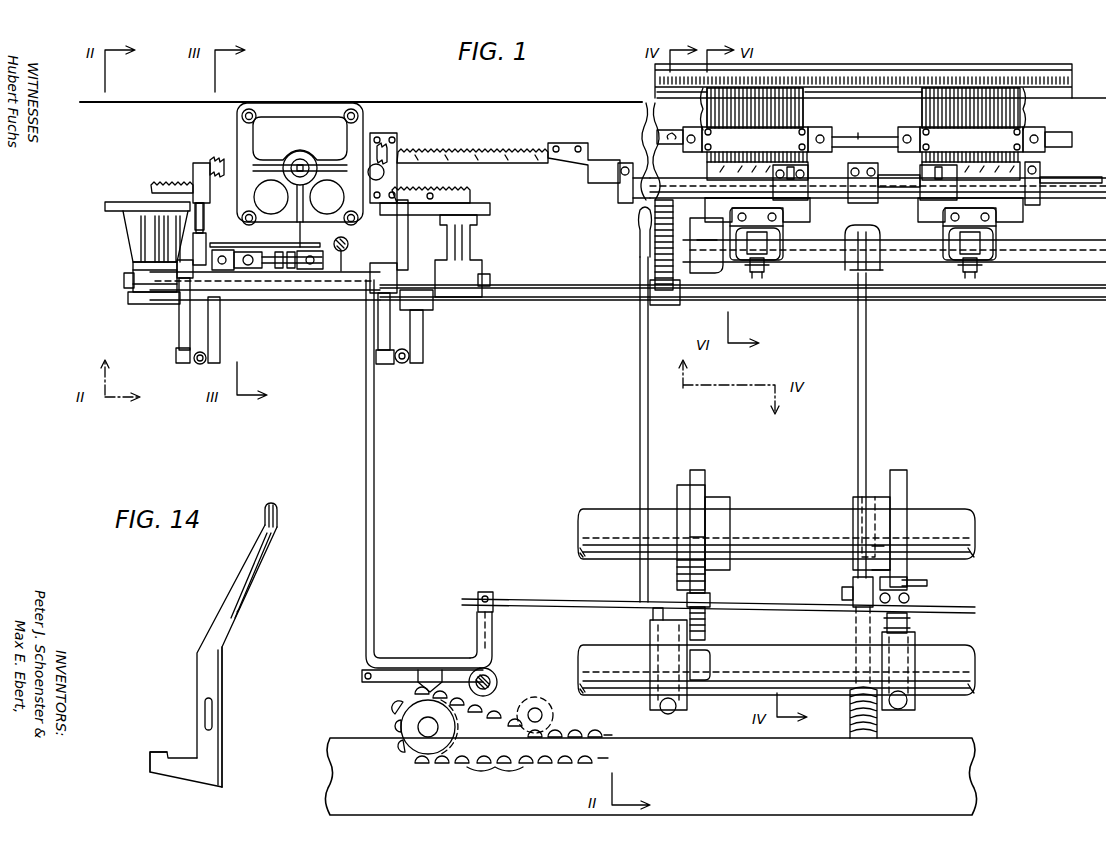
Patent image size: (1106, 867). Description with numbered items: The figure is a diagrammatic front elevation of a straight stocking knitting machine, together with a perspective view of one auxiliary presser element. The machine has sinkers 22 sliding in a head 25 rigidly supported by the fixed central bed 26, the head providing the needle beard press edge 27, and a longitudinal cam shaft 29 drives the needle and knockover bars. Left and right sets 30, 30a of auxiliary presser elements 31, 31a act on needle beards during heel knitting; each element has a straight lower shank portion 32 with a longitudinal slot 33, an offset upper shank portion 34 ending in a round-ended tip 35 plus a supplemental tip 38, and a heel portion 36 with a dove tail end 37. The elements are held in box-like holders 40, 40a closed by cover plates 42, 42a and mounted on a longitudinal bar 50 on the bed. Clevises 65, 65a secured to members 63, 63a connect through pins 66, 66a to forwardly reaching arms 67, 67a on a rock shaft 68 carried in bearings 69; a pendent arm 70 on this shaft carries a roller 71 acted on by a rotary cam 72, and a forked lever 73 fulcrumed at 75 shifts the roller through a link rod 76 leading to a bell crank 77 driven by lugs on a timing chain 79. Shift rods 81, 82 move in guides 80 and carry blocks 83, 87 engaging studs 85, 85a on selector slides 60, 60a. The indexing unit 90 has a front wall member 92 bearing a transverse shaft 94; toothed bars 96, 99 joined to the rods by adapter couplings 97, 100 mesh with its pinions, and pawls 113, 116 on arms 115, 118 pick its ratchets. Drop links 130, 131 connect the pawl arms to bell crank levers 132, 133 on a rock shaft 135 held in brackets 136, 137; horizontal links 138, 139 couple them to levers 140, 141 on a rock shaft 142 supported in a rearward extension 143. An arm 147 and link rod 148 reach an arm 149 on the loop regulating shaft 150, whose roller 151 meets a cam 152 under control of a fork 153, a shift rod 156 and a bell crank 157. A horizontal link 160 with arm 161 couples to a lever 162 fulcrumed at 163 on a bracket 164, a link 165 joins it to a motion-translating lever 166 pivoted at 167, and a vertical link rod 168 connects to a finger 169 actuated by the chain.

In FIG. 1, the sinkers 22 is at (827, 76).
In FIG. 1, the head 25 is at (866, 74).
In FIG. 1, the central member or bed 26 is at (614, 104).
In FIG. 1, the needle beard press edge 27 is at (908, 86).
In FIG. 1, the cam shaft 29 is at (790, 510).
In FIG. 1, the left set of auxiliary presser elements 30 is at (689, 109).
In FIG. 1, the right set of auxiliary presser elements 30a is at (1026, 110).
In FIG. 1, the auxiliary presser element 31 is at (801, 114).
In FIG. 14, the auxiliary presser element 31 is at (245, 645).
In FIG. 1, the auxiliary presser element 31a is at (924, 114).
In FIG. 14, the lower shank portion 32 is at (225, 732).
In FIG. 14, the slot 33 is at (198, 708).
In FIG. 14, the upper shank portion 34 is at (234, 579).
In FIG. 14, the needle beard engaging tip 35 is at (267, 502).
In FIG. 14, the bottom or heel portion 36 is at (184, 776).
In FIG. 14, the dove tail end 37 is at (150, 757).
In FIG. 14, the supplemental needle beard engaging tip 38 is at (280, 513).
In FIG. 1, the box-like holder 40 is at (668, 134).
In FIG. 1, the box-like holder 40a is at (1068, 137).
In FIG. 1, the cover plate 42 is at (757, 139).
In FIG. 1, the cover plate 42a is at (971, 139).
In FIG. 1, the longitudinal bar 50 is at (860, 134).
In FIG. 1, the selector slide 60 is at (707, 168).
In FIG. 1, the selector slide 60a is at (1037, 166).
In FIG. 1, the member 63 is at (800, 212).
In FIG. 1, the member 63a is at (1005, 214).
In FIG. 1, the clevis 65 is at (736, 228).
In FIG. 1, the clevis 65a is at (950, 248).
In FIG. 1, the pin 66 is at (780, 251).
In FIG. 1, the pin 66a is at (1000, 251).
In FIG. 1, the forwardly reaching arm 67 is at (764, 266).
In FIG. 1, the forwardly reaching arm 67a is at (980, 266).
In FIG. 1, the rock shaft 68 is at (1088, 242).
In FIG. 1, the bearings 69 is at (706, 245).
In FIG. 1, the pendent arm 70 is at (868, 392).
In FIG. 1, the roller 71 is at (904, 590).
In FIG. 1, the rotary cam 72 is at (912, 484).
In FIG. 1, the forked lever 73 is at (926, 592).
In FIG. 1, the fulcrum 75 is at (912, 624).
In FIG. 1, the link rod 76 is at (460, 608).
In FIG. 1, the bell crank 77 is at (470, 640).
In FIG. 1, the timing chain 79 is at (502, 743).
In FIG. 1, the spaced guides 80 is at (622, 212).
In FIG. 1, the shift rod 81 is at (626, 164).
In FIG. 1, the shift rod 82 is at (624, 202).
In FIG. 1, the block 83 is at (802, 196).
In FIG. 1, the stud 85 is at (806, 166).
In FIG. 1, the stud 85a is at (930, 168).
In FIG. 1, the block 87 is at (918, 192).
In FIG. 1, the indexing unit 90 is at (324, 90).
In FIG. 1, the front wall member 92 is at (338, 108).
In FIG. 1, the transverse shaft 94 is at (300, 158).
In FIG. 1, the toothed horizontal bar 96 is at (155, 184).
In FIG. 1, the adapter coupling 97 is at (448, 200).
In FIG. 1, the toothed horizontal bar 99 is at (505, 148).
In FIG. 1, the adapter coupling 100 is at (559, 164).
In FIG. 1, the pawl 113 is at (271, 197).
In FIG. 1, the supporting arm 115 is at (215, 156).
In FIG. 1, the pawl 116 is at (327, 197).
In FIG. 1, the pawl arm 118 is at (396, 148).
In FIG. 1, the drop link 130 is at (195, 167).
In FIG. 1, the drop link 131 is at (408, 271).
In FIG. 1, the bell crank lever 132 is at (180, 333).
In FIG. 1, the bell crank lever 133 is at (372, 332).
In FIG. 1, the rock shaft 135 is at (124, 279).
In FIG. 1, the suspension bearing bracket 136 is at (122, 232).
In FIG. 1, the suspension bearing bracket 137 is at (472, 238).
In FIG. 1, the horizontal link 138 is at (200, 364).
In FIG. 1, the horizontal link 139 is at (403, 363).
In FIG. 1, the bell crank lever 140 is at (220, 342).
In FIG. 1, the bell crank lever 141 is at (425, 331).
In FIG. 1, the rock shaft 142 is at (575, 296).
In FIG. 1, the rearward extension 143 is at (132, 307).
In FIG. 1, the arm 147 is at (644, 270).
In FIG. 1, the link rod 148 is at (637, 420).
In FIG. 1, the arm 149 is at (658, 680).
In FIG. 1, the loop regulating shaft 150 is at (582, 663).
In FIG. 1, the roller 151 is at (704, 680).
In FIG. 1, the rotary cam 152 is at (711, 478).
In FIG. 1, the fork 153 is at (713, 623).
In FIG. 1, the horizontal shift rod 156 is at (566, 598).
In FIG. 1, the bell crank 157 is at (486, 582).
In FIG. 1, the horizontal link 160 is at (308, 266).
In FIG. 1, the arm 161 is at (314, 244).
In FIG. 1, the transversely arranged lever 162 is at (222, 268).
In FIG. 1, the fulcrum 163 is at (246, 265).
In FIG. 1, the fixed bracket 164 is at (231, 243).
In FIG. 1, the link 165 is at (279, 292).
In FIG. 1, the angular motion-translating lever 166 is at (346, 242).
In FIG. 1, the pivot 167 is at (328, 254).
In FIG. 1, the vertical link rod 168 is at (374, 470).
In FIG. 1, the finger 169 is at (368, 677).